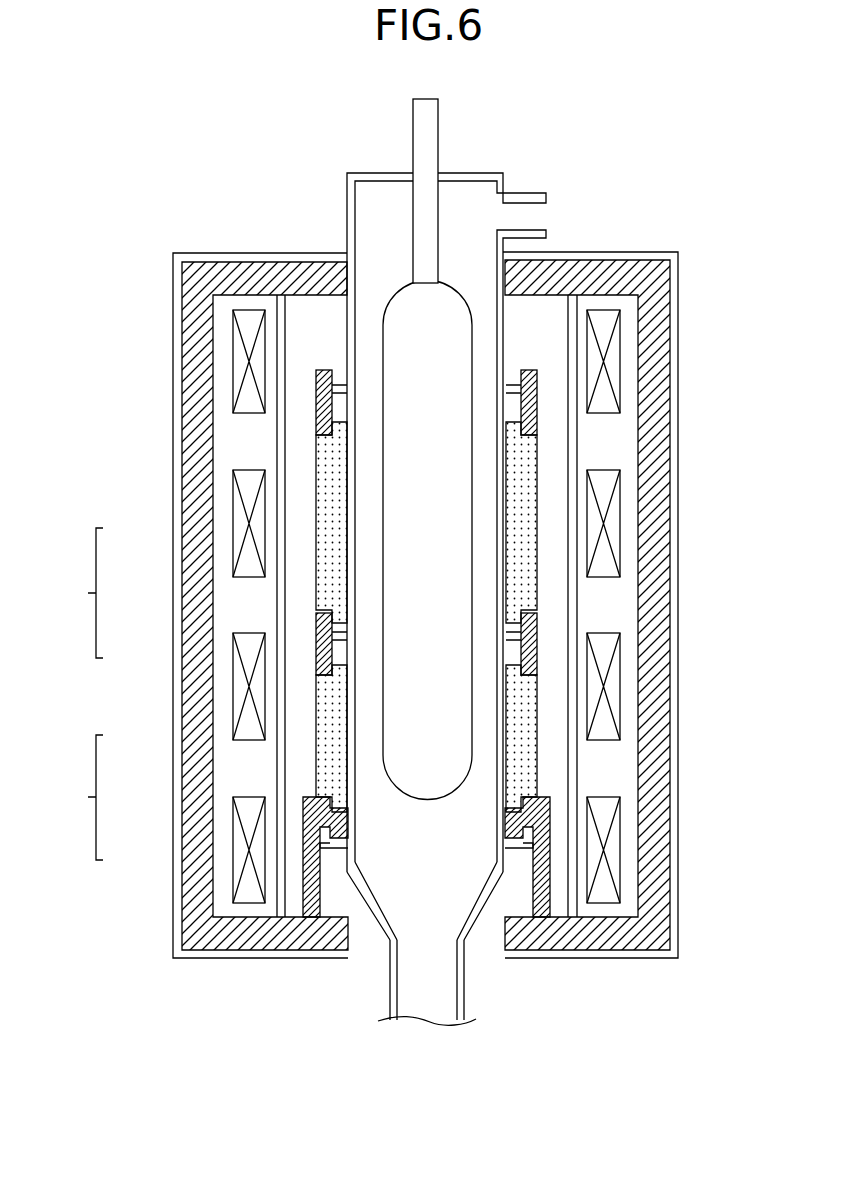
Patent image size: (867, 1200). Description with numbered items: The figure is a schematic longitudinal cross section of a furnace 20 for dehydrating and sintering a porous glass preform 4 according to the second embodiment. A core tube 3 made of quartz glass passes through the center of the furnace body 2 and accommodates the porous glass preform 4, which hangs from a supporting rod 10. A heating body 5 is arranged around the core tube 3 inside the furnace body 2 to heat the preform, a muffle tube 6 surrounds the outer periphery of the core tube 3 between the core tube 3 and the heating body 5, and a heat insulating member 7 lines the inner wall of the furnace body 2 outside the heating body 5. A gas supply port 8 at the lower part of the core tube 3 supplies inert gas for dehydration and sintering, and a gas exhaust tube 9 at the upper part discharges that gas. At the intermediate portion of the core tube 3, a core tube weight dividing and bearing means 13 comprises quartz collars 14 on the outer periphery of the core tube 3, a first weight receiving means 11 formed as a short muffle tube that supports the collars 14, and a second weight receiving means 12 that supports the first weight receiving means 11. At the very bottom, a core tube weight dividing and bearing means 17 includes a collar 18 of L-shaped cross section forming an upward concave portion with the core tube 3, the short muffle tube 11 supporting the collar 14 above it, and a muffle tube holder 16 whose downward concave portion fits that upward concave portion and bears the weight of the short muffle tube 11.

The furnace body 2 is at (180, 676).
The core tube 3 is at (347, 208).
The porous glass preform 4 is at (452, 288).
The heating body 5 is at (240, 388).
The muffle tube 6 is at (577, 437).
The heat insulating member 7 is at (200, 343).
The gas supply port 8 is at (450, 990).
The gas exhaust tube 9 is at (528, 230).
The supporting rod 10 is at (413, 125).
The first weight receiving means 11 is at (325, 563).
The second weight receiving means 12 is at (318, 647).
The core tube weight dividing and bearing means 13 is at (80, 593).
The collar 14 is at (318, 623).
The muffle tube holder 16 is at (305, 811).
The core tube weight dividing and bearing means 17 is at (80, 797).
The collar 18 is at (320, 847).
The furnace 20 is at (680, 153).